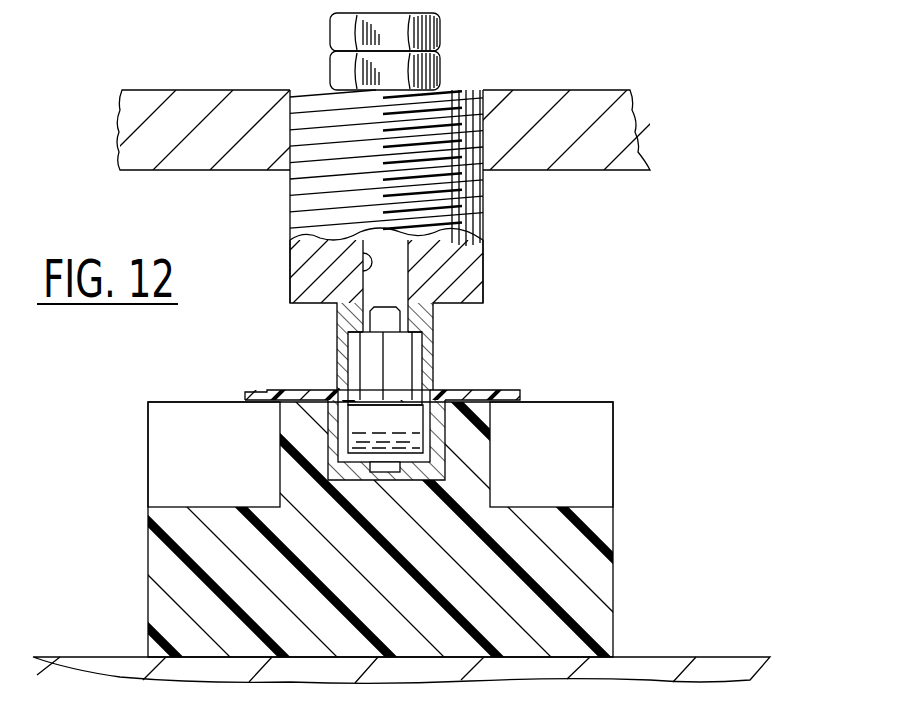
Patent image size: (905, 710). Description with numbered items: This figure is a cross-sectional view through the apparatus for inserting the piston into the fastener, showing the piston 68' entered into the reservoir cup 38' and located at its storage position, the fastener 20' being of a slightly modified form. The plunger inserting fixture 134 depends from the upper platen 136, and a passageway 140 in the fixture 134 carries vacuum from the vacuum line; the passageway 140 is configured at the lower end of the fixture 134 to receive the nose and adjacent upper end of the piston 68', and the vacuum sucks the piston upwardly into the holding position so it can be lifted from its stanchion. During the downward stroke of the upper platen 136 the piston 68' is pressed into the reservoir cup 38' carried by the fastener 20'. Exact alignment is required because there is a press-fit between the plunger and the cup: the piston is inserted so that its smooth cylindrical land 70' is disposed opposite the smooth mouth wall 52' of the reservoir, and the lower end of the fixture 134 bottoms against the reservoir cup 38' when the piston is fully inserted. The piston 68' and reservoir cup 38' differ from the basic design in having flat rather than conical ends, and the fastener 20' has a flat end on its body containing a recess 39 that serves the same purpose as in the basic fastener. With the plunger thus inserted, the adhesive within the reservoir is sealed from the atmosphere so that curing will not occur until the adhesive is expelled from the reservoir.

The upper platen 136 is at (578, 107).
The plunger inserting fixture 134 is at (476, 222).
The passageway 140 is at (376, 272).
The piston 68' is at (496, 306).
The land 70' is at (444, 368).
The mouth wall 52' is at (350, 350).
The reservoir cup 38' is at (526, 406).
The recess 39 is at (383, 470).
The fastener 20' is at (328, 367).